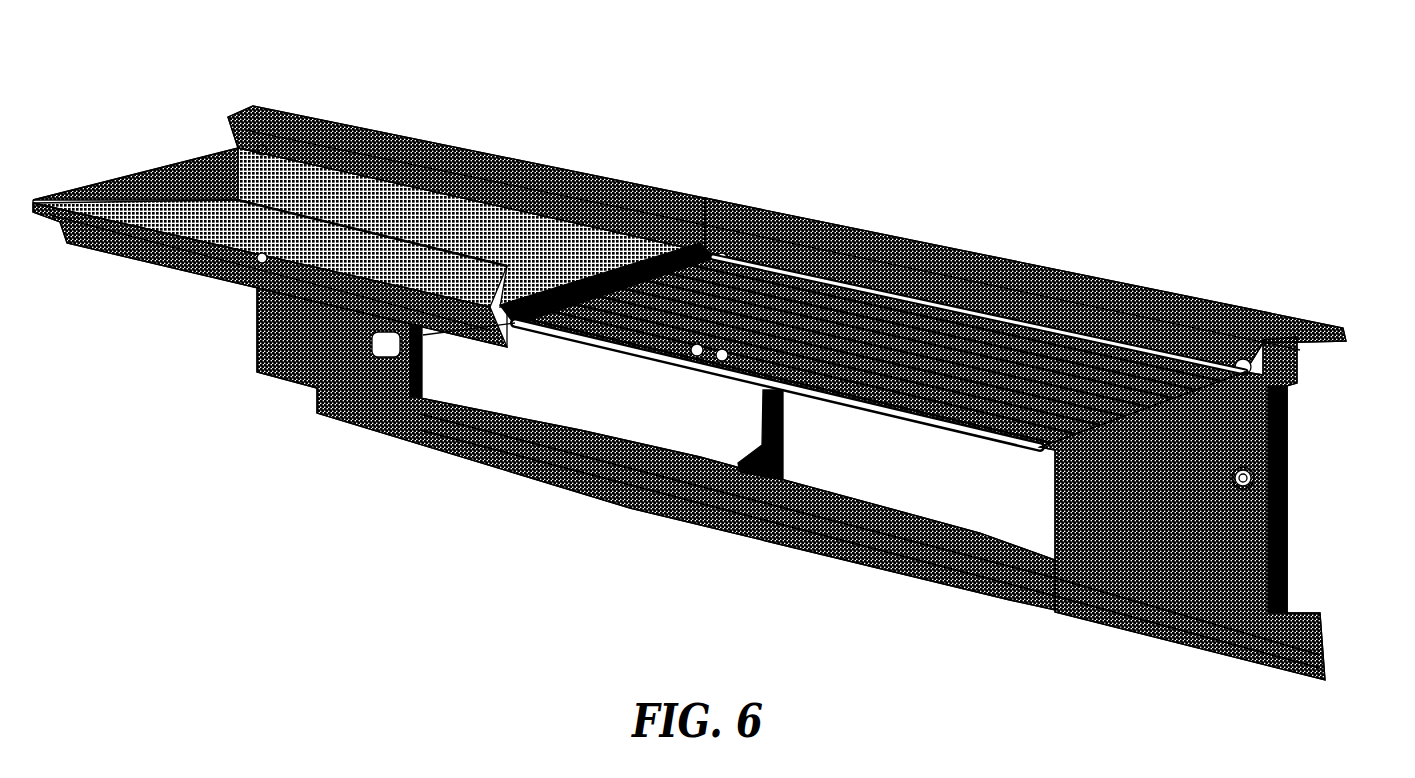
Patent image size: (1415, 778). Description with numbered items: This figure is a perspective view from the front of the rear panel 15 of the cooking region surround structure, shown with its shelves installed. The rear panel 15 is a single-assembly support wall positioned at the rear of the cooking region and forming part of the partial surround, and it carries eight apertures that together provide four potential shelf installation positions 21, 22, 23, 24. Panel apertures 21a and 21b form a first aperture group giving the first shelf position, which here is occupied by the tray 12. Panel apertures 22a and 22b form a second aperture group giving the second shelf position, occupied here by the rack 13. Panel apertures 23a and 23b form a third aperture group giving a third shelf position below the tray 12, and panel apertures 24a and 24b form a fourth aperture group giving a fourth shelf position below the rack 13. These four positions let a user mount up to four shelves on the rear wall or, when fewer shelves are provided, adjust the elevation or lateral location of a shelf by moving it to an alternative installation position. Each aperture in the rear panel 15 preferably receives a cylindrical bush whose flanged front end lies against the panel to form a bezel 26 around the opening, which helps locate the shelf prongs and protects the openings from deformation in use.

The tray 12 is at (130, 168).
The rack 13 is at (1203, 387).
The rear panel 15 is at (297, 360).
The first shelf installation position 21 is at (262, 148).
The panel aperture 21a is at (258, 147).
The panel aperture 21b is at (694, 247).
The second shelf installation position 22 is at (730, 258).
The panel aperture 22a is at (727, 252).
The panel aperture 22b is at (1250, 368).
The third shelf installation position 23 is at (670, 358).
The panel aperture 23a is at (256, 268).
The panel aperture 23b is at (696, 356).
The fourth shelf installation position 24 is at (1240, 485).
The panel aperture 24a is at (722, 360).
The panel aperture 24b is at (1246, 482).
The bezel 26 is at (1237, 495).